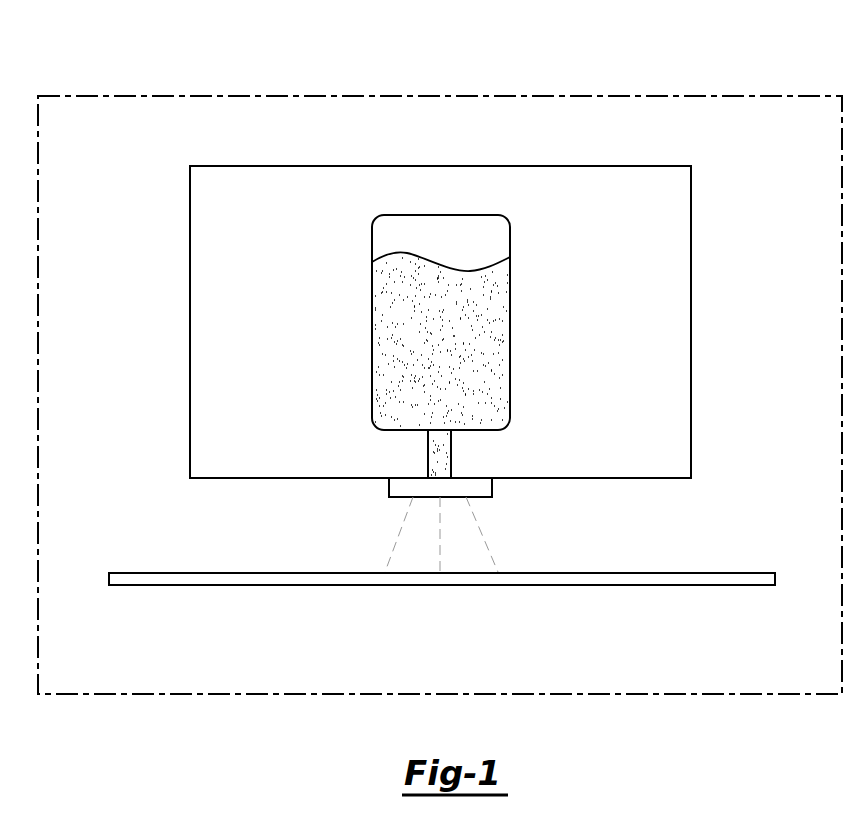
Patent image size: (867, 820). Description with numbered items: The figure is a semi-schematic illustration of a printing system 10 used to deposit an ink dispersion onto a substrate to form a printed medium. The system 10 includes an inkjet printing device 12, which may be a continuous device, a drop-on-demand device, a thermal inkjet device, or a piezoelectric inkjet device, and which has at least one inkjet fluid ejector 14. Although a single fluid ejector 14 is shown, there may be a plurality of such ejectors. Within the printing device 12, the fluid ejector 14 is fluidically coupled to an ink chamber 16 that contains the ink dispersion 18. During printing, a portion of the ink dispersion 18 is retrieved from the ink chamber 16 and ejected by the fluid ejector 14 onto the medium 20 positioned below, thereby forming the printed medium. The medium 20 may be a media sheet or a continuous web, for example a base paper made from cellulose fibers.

The printing system 10 is at (680, 71).
The inkjet printing device 12 is at (190, 302).
The inkjet fluid ejector 14 is at (391, 497).
The ink chamber 16 is at (440, 216).
The ink dispersion 18 is at (470, 346).
The medium 20 is at (711, 578).